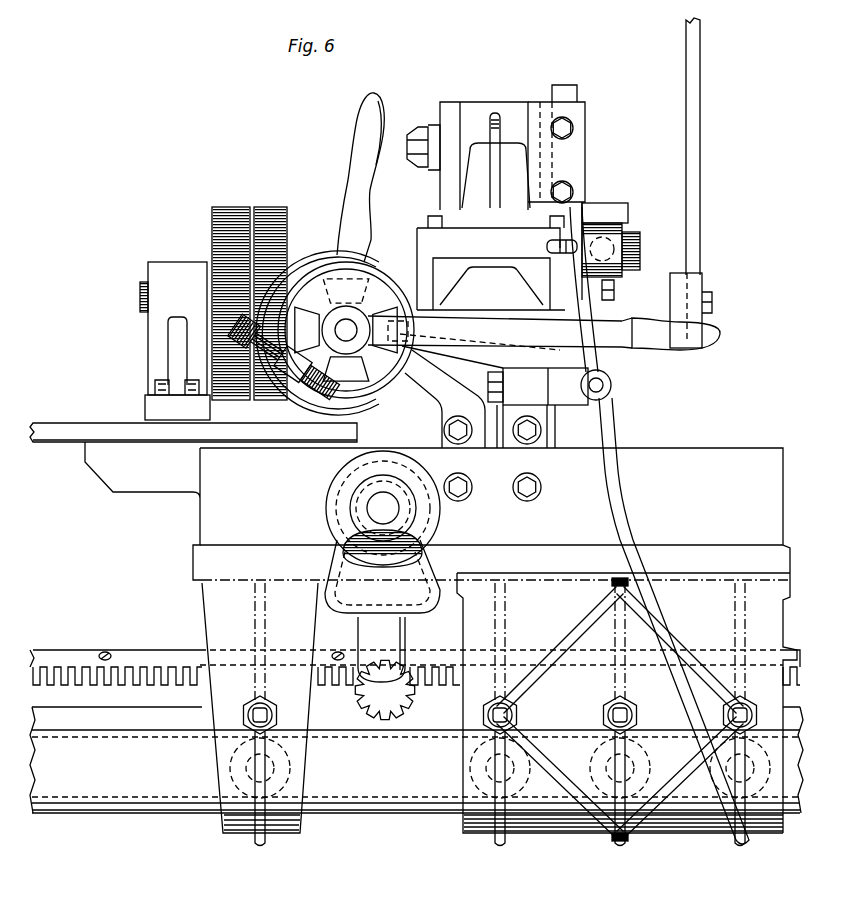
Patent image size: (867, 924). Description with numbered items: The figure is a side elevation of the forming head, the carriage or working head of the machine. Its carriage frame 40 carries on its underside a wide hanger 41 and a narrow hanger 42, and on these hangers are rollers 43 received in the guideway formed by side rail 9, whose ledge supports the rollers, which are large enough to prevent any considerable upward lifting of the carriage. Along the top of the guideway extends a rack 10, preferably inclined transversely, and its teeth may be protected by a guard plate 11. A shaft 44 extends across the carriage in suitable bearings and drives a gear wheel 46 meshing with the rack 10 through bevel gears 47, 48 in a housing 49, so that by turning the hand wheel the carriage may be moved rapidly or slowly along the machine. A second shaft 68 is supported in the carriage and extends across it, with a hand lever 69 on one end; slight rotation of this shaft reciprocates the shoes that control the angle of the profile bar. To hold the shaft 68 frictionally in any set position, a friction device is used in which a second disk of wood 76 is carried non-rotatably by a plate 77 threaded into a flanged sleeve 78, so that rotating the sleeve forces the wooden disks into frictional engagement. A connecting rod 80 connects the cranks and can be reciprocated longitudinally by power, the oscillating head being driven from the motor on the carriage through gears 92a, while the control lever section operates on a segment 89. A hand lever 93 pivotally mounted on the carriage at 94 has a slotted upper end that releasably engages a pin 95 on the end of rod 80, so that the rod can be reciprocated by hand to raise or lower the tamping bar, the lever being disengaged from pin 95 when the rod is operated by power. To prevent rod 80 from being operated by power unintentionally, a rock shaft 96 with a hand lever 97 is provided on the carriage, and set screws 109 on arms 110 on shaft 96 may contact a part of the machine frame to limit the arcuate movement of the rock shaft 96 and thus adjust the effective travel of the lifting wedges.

The side rail 9 is at (416, 760).
The rack 10 is at (52, 650).
The guard plate 11 is at (134, 648).
The carriage frame 40 is at (441, 637).
The wide hanger 41 is at (614, 845).
The narrow hanger 42 is at (290, 838).
The roller 43 is at (300, 774).
The shaft 44 is at (375, 510).
The gear wheel 46 is at (380, 712).
The bevel gear 47 is at (358, 481).
The bevel gear 48 is at (345, 565).
The housing 49 is at (430, 560).
The shaft 68 is at (351, 325).
The hand lever 69 is at (544, 333).
The second disk of wood 76 is at (358, 382).
The plate 77 is at (378, 372).
The flanged sleeve 78 is at (365, 290).
The connecting rod 80 is at (610, 240).
The segment 89 is at (686, 119).
The gears 92a is at (248, 250).
The hand lever 93 is at (628, 520).
The pivot 94 is at (609, 388).
The pin 95 is at (554, 246).
The rock shaft 96 is at (342, 262).
The hand lever 97 is at (355, 122).
The set screw 109 is at (245, 378).
The arm 110 is at (302, 395).